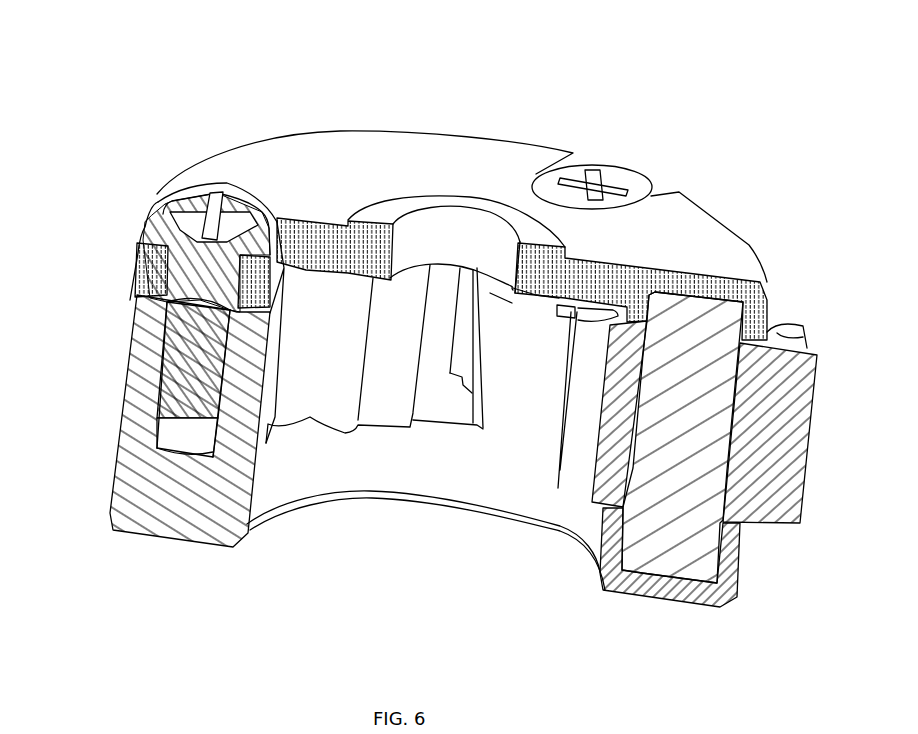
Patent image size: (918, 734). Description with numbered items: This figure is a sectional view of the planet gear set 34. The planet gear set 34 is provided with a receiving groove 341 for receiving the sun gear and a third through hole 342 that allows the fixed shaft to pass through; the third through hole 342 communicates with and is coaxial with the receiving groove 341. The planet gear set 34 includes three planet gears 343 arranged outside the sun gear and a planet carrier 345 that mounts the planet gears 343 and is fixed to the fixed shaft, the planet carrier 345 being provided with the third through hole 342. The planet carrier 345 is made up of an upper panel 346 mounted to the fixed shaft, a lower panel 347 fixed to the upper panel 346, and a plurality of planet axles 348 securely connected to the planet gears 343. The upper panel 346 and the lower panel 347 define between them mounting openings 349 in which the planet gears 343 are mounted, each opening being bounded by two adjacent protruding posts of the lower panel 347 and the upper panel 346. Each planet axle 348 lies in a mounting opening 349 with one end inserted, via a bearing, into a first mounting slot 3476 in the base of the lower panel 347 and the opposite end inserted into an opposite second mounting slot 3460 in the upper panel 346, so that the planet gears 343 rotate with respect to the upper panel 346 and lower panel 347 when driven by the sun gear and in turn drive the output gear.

The planet gear set 34 is at (436, 32).
The receiving groove 341 is at (456, 468).
The third through hole 342 is at (461, 243).
The planet gears 343 is at (565, 495).
The planet carrier 345 is at (117, 128).
The upper panel 346 is at (245, 175).
The lower panel 347 is at (128, 335).
The planet axles 348 is at (700, 535).
The mounting openings 349 is at (277, 432).
The second mounting slots 3460 is at (697, 282).
The first mounting slot 3476 is at (667, 585).